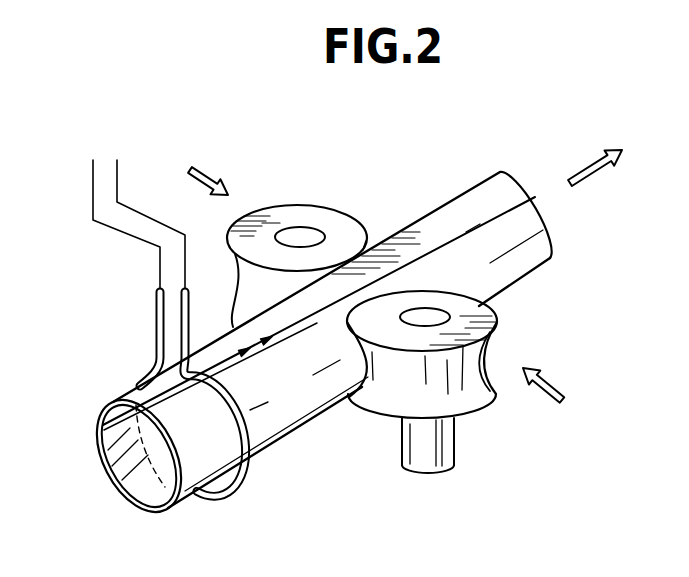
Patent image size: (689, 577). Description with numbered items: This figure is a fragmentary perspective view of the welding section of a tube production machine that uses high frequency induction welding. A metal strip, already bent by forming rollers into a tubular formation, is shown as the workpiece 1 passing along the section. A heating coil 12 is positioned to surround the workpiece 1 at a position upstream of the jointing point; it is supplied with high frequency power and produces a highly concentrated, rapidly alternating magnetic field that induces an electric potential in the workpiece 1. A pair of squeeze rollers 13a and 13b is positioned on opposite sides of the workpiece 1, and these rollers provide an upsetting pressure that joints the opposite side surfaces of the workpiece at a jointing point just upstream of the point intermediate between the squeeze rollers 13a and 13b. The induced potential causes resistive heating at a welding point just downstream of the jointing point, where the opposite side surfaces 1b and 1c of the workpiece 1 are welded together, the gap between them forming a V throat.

The workpiece 1 is at (432, 222).
The opposite side surface 1b is at (100, 436).
The opposite side surface 1c is at (128, 472).
The heating coil 12 is at (240, 484).
The squeeze roller 13a is at (305, 207).
The squeeze roller 13b is at (480, 396).